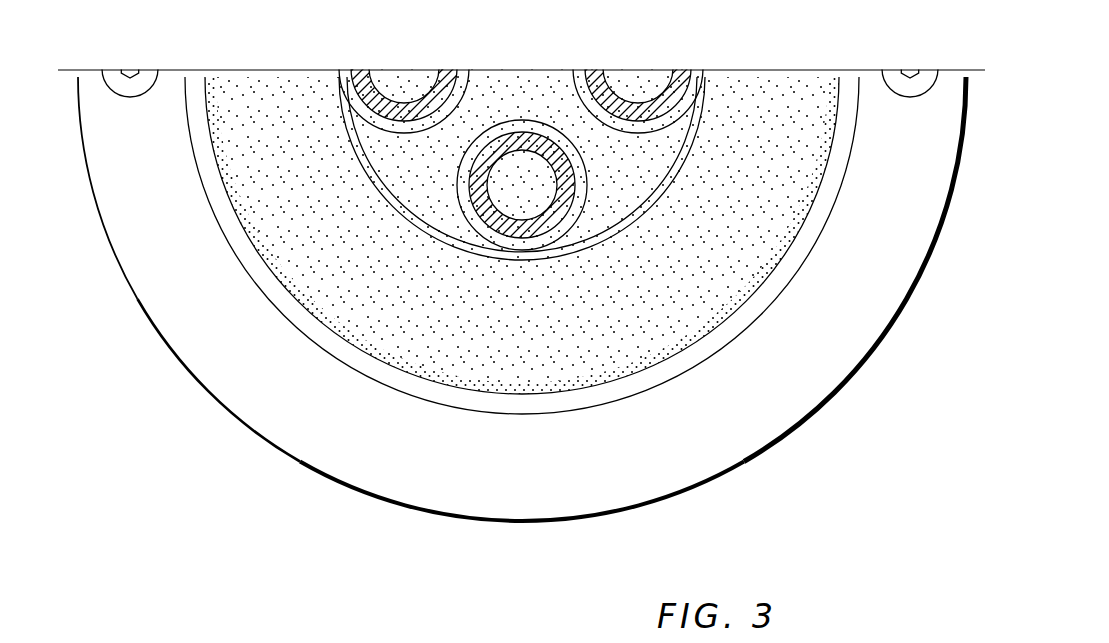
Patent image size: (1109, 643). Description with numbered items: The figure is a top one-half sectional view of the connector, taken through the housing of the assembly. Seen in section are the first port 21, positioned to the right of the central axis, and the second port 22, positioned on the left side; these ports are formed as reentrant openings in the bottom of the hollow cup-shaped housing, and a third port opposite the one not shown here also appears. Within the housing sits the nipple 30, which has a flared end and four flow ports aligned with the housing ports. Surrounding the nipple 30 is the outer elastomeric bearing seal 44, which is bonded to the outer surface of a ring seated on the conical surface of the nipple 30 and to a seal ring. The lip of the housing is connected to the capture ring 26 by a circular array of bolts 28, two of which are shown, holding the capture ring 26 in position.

The first port 21 is at (645, 89).
The second port 22 is at (413, 92).
The capture ring 26 is at (346, 468).
The bolts 28 is at (128, 91).
The nipple 30 is at (533, 108).
The outer elastomeric bearing seal 44 is at (538, 340).